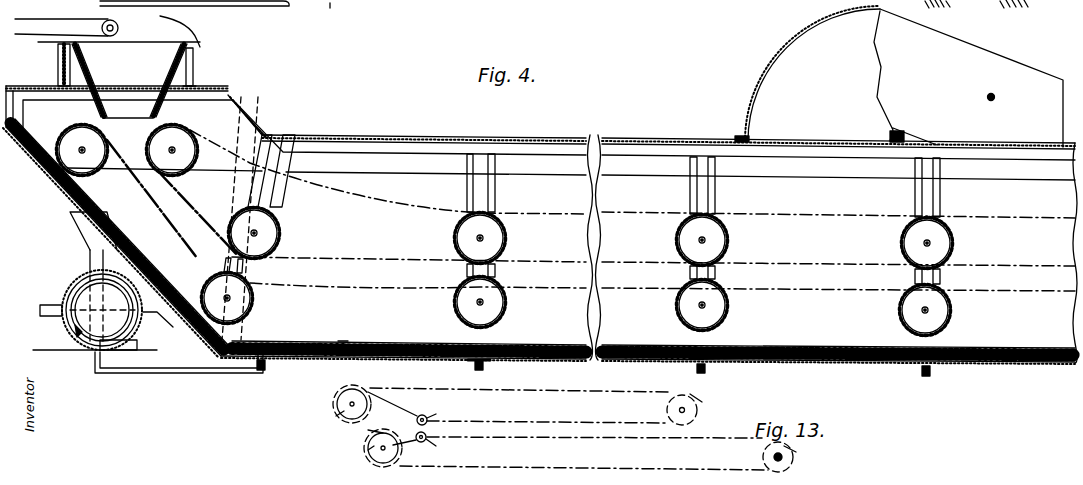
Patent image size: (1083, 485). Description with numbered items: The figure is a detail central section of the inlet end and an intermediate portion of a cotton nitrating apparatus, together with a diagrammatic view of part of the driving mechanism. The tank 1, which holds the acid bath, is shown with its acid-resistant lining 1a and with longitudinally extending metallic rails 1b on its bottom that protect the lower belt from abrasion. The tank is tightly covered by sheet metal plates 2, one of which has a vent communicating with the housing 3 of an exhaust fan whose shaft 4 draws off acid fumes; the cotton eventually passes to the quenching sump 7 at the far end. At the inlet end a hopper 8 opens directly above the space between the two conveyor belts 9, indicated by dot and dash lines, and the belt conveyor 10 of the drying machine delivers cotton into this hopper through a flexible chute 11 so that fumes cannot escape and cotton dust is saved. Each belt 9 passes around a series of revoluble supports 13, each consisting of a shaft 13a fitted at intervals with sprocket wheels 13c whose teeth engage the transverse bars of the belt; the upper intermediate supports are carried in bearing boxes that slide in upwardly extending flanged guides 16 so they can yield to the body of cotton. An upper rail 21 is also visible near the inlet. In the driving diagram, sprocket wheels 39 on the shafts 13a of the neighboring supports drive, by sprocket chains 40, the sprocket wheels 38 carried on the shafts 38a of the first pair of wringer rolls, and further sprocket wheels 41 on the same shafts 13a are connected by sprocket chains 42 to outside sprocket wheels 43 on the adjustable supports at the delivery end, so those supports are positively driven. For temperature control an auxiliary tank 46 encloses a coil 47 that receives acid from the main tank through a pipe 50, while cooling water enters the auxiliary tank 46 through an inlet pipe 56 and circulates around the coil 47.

In FIG. 4, the tank 1 is at (26, 147).
In FIG. 4, the lining 1a is at (777, 172).
In FIG. 4, the metallic rails 1b is at (342, 340).
In FIG. 4, the sheet metal plates 2 is at (368, 134).
In FIG. 4, the housing 3 is at (764, 68).
In FIG. 4, the shaft 4 is at (987, 98).
In FIG. 4, the quenching sump 7 is at (956, 9).
In FIG. 4, the hopper 8 is at (195, 71).
In FIG. 4, the conveyor belts 9 is at (174, 189).
In FIG. 4, the belt conveyor 10 is at (66, 18).
In FIG. 4, the flexible chute 11 is at (44, 44).
In FIG. 4, the revoluble supports 13 is at (910, 240).
In FIG. 4, the shaft 13a is at (702, 305).
In FIG. 13, the shaft 13a is at (778, 457).
In FIG. 4, the sprocket wheels 13c is at (966, 321).
In FIG. 4, the flanged guides 16 is at (254, 190).
In FIG. 4, the upper rail 21 is at (326, 9).
In FIG. 13, the sprocket wheels 38 is at (432, 418).
In FIG. 13, the shafts 38a is at (458, 443).
In FIG. 13, the sprocket wheels 39 is at (365, 434).
In FIG. 13, the sprocket chains 40 is at (421, 414).
In FIG. 13, the sprocket wheel 41 is at (334, 418).
In FIG. 13, the sprocket chains 42 is at (547, 392).
In FIG. 13, the sprocket wheels 43 is at (700, 403).
In FIG. 4, the auxiliary tank 46 is at (80, 279).
In FIG. 4, the coil 47 is at (72, 324).
In FIG. 4, the pipe 50 is at (262, 3).
In FIG. 4, the inlet pipe 56 is at (66, 300).